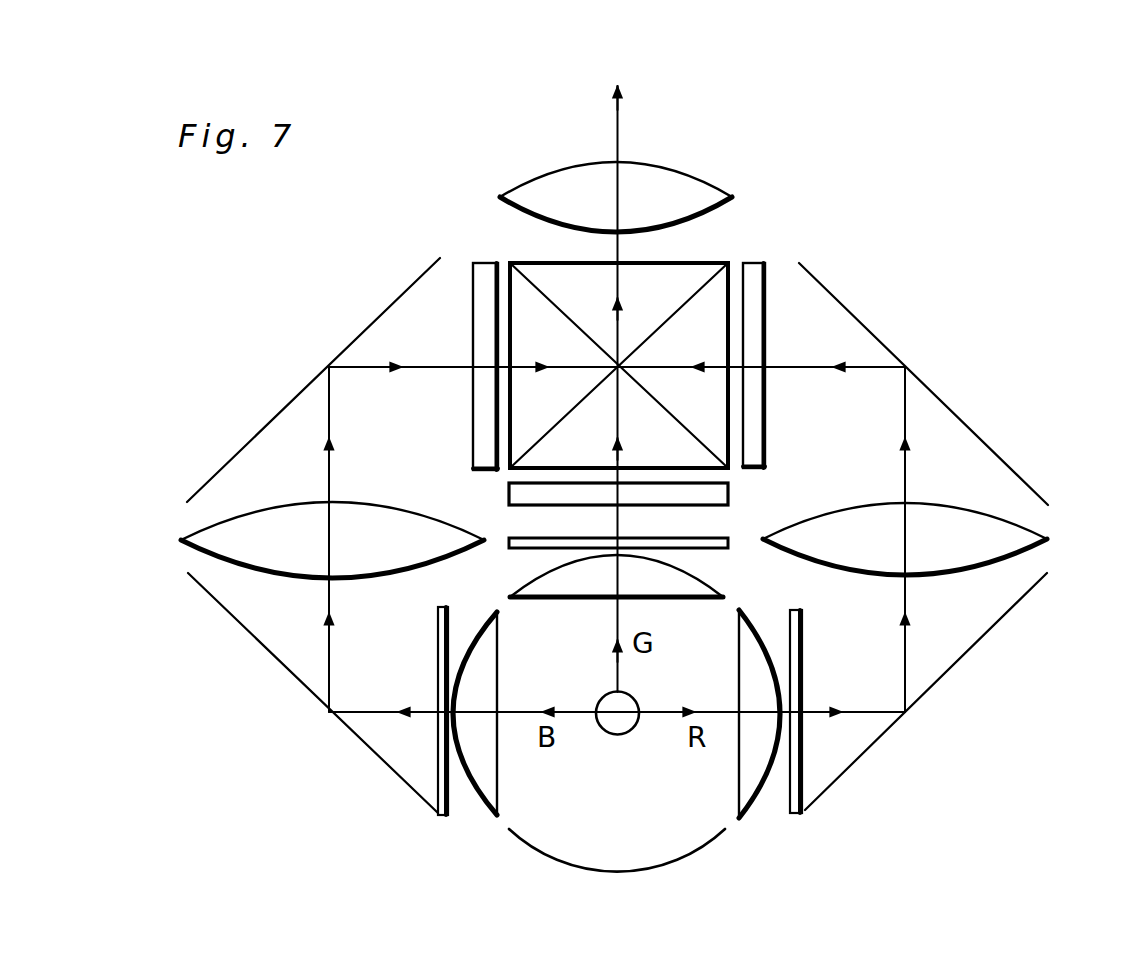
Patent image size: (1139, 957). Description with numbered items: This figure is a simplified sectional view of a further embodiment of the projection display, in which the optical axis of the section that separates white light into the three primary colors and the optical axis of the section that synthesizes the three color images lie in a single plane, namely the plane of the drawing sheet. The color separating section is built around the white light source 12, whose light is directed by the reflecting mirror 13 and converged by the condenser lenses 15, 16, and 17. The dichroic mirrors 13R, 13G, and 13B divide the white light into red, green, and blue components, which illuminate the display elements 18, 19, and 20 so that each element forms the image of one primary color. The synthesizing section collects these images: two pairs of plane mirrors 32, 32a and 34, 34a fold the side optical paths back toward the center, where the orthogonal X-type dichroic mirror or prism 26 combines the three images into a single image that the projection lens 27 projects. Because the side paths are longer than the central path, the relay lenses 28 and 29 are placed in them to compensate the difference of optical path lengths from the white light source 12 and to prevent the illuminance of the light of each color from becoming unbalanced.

The white light source 12 is at (617, 717).
The reflecting mirror 13 is at (620, 873).
The dichroic mirror 13B is at (442, 645).
The dichroic mirror 13G is at (710, 548).
The dichroic mirror 13R is at (798, 640).
The condenser lens 15 is at (748, 777).
The condenser lens 16 is at (567, 578).
The condenser lens 17 is at (483, 788).
The display element 18 is at (752, 278).
The display element 19 is at (710, 493).
The display element 20 is at (483, 287).
The orthogonal X-type dichroic mirror or prism 26 is at (677, 262).
The projection lens 27 is at (690, 192).
The relay lens 28 is at (1005, 542).
The relay lens 29 is at (223, 538).
The plane mirror 32 is at (1002, 622).
The plane mirror 32a is at (1008, 462).
The plane mirror 34 is at (258, 647).
The plane mirror 34a is at (237, 448).